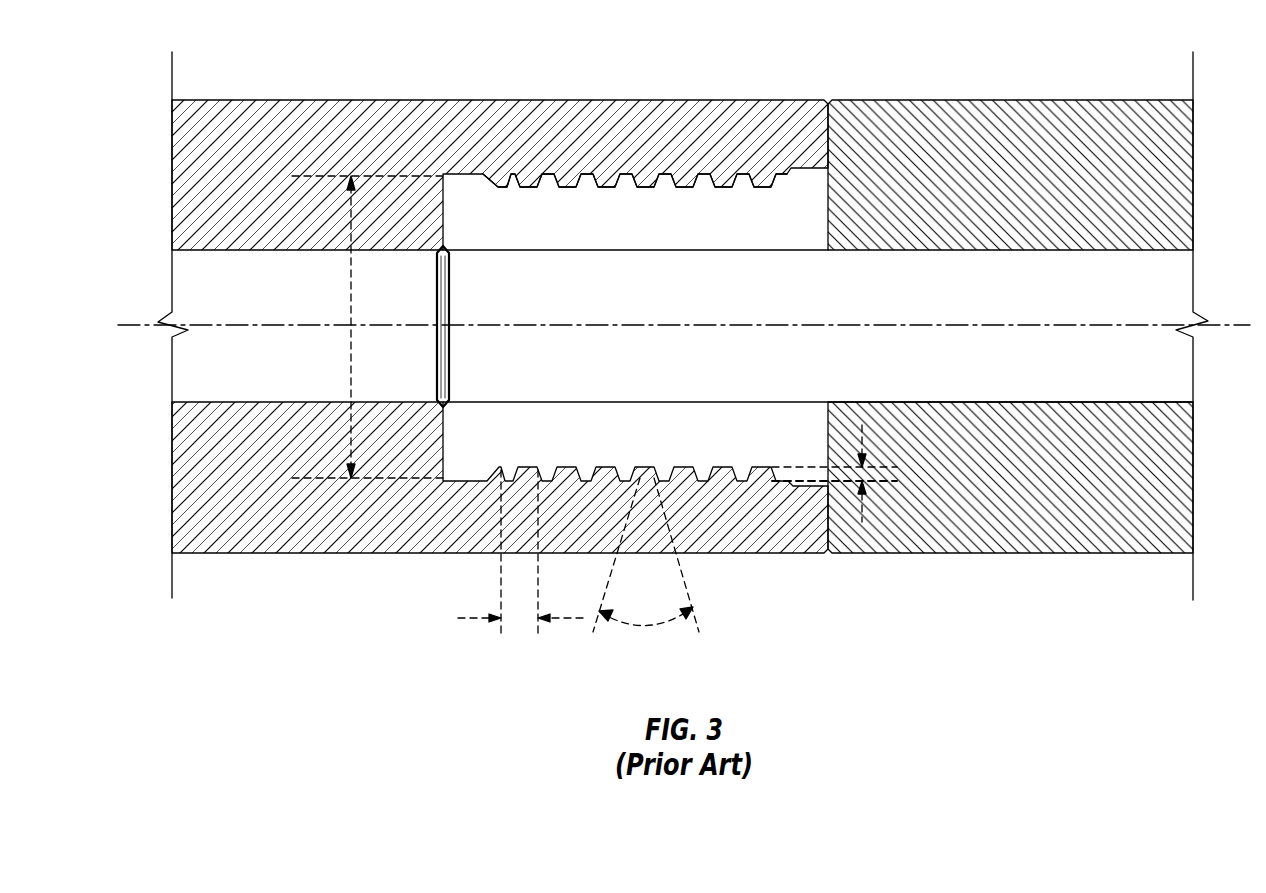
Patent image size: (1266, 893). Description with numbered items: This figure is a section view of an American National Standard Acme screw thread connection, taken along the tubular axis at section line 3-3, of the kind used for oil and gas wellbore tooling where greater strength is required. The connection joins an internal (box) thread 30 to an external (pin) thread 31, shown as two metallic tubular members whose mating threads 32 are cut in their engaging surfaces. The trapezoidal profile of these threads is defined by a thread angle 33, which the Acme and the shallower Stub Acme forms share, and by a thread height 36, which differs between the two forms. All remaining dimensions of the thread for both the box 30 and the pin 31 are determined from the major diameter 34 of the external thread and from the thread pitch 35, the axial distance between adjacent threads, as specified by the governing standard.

The section line 3- 3 is at (125, 325).
The internal (box) thread 30 is at (235, 100).
The external (pin) thread 31 is at (1062, 100).
The threads 32 is at (640, 182).
The thread angle 33 is at (648, 626).
The major diameter 34 is at (350, 303).
The thread pitch 35 is at (477, 616).
The thread height 36 is at (862, 440).